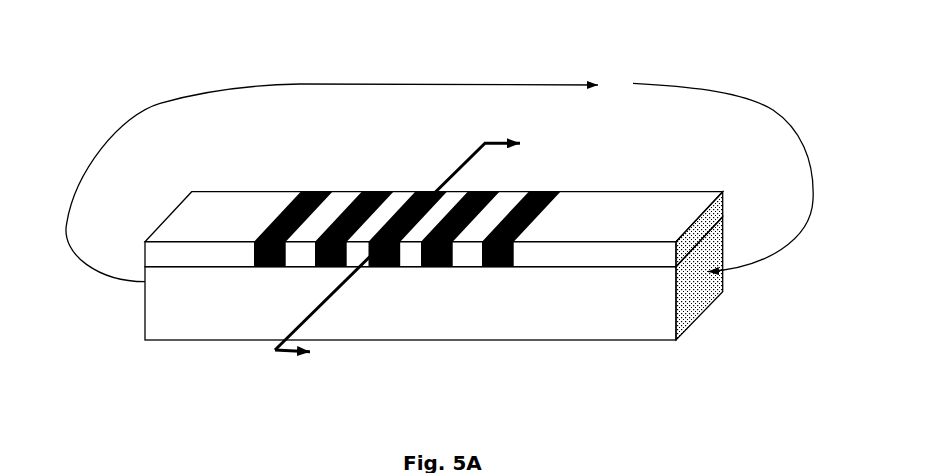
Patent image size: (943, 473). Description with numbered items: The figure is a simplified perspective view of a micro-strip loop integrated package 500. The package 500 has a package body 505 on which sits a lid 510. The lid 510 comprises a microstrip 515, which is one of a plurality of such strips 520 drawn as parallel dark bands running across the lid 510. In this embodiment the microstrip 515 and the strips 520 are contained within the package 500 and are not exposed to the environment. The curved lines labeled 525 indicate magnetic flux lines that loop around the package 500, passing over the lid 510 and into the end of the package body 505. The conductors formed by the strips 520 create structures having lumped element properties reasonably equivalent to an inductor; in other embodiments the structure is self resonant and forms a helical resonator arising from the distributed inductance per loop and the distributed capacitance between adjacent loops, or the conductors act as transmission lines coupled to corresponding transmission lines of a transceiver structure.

The micro-strip loop integrated package 500 is at (68, 35).
The package body 505 is at (175, 338).
The lid 510 is at (173, 203).
The microstrip 515 is at (387, 268).
The strips 520 is at (407, 212).
The magnetic flux lines 525 is at (439, 182).